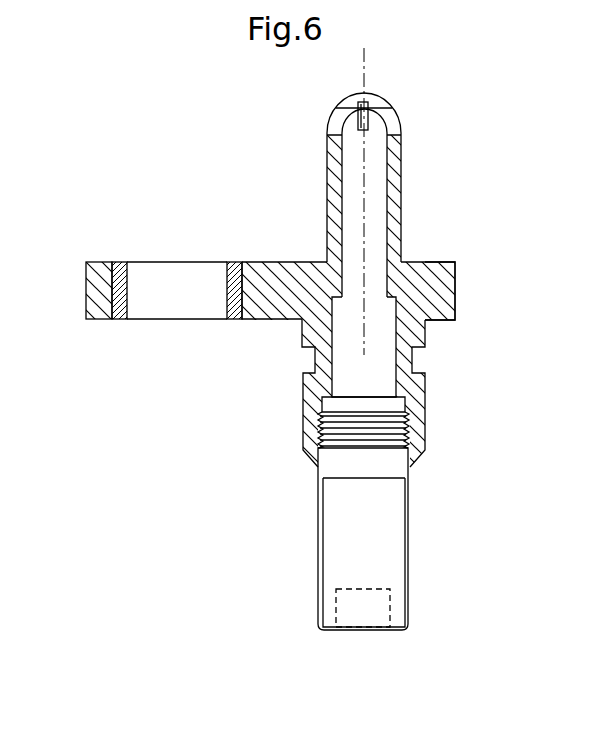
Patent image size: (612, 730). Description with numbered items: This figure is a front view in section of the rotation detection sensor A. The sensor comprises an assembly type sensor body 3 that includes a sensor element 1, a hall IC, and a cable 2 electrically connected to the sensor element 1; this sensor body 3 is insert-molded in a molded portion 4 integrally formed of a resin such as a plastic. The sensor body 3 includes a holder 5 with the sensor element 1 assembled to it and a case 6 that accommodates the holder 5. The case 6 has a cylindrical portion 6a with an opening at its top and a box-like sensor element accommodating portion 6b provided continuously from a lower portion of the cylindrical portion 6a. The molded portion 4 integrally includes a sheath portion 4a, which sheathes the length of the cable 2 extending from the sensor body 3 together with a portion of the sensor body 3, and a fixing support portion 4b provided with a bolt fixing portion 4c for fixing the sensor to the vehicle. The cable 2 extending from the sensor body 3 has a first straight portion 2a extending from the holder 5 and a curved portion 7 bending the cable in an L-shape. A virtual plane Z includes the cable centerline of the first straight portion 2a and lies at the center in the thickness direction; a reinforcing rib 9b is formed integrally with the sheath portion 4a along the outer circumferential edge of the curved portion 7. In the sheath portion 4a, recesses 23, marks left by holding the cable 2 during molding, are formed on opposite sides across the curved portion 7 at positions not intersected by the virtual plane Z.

The rotation detection sensor A is at (96, 182).
The sensor element 1 is at (375, 588).
The cable 2 is at (335, 196).
The first straight portion 2a is at (373, 207).
The sensor body 3 is at (401, 349).
The molded portion 4 is at (326, 237).
The sheath portion 4a is at (447, 290).
The fixing support portion 4b is at (95, 293).
The bolt fixing portion 4c is at (225, 311).
The holder 5 is at (371, 310).
The case 6 is at (316, 503).
The cylindrical portion 6a is at (383, 473).
The sensor element accommodating portion 6b is at (335, 552).
The curved portion 7 is at (376, 119).
The reinforcing rib 9b is at (352, 104).
The recesses 23 is at (334, 128).
The virtual plane Z is at (364, 347).